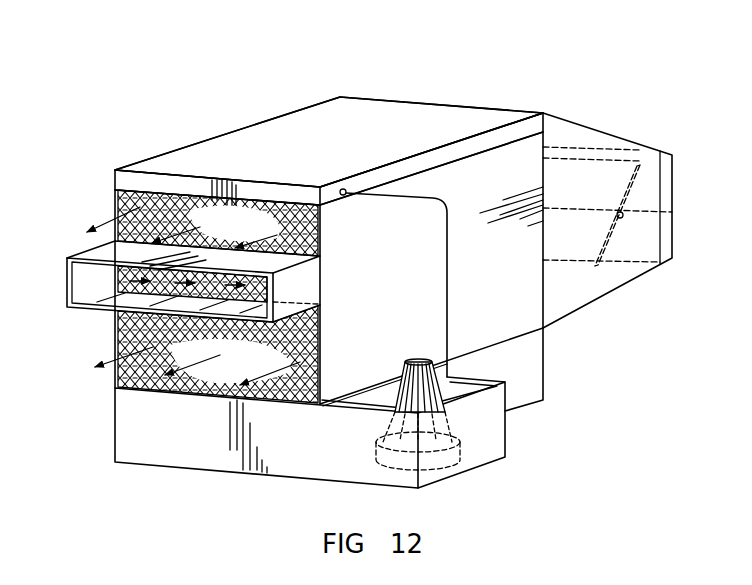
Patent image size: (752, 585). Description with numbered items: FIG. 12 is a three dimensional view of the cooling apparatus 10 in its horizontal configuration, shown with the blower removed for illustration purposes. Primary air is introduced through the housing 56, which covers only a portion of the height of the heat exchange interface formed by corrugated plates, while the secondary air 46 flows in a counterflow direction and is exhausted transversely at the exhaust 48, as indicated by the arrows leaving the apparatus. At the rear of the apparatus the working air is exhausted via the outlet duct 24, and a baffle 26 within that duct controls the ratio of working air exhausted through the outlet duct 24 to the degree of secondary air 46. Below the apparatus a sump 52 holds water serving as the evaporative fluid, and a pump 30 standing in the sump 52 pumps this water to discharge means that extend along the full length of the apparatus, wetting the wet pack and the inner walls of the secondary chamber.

The filtering apparatus 10 is at (221, 60).
The secondary air 46 is at (408, 120).
The secondary air exhaust 48 is at (105, 230).
The housing 56 is at (97, 249).
The pump 30 is at (416, 361).
The sump 52 is at (485, 440).
The baffle 26 is at (668, 177).
The outlet duct 24 is at (675, 214).